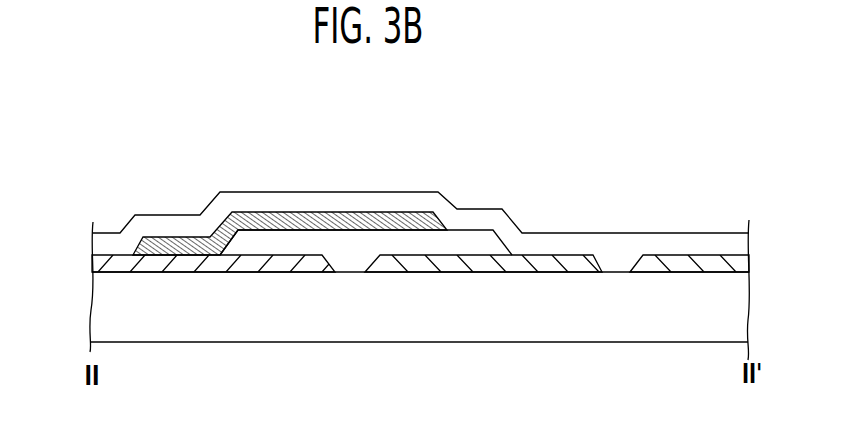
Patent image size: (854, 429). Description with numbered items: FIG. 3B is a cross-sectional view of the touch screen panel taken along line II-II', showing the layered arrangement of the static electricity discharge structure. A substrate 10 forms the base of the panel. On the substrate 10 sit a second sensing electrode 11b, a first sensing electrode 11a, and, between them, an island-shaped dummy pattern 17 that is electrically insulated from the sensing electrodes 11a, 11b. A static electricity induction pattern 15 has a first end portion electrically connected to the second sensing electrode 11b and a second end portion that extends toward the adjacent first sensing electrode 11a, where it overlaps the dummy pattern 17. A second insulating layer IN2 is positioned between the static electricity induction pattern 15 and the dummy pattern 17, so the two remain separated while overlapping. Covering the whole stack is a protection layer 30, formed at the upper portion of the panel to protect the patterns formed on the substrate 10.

The substrate 10 is at (100, 305).
The first sensing electrode 11a is at (682, 260).
The second sensing electrode 11b is at (260, 260).
The dummy pattern 17 is at (483, 260).
The static electricity induction pattern 15 is at (350, 217).
The second insulating layer IN2 is at (470, 240).
The protection layer 30 is at (102, 239).